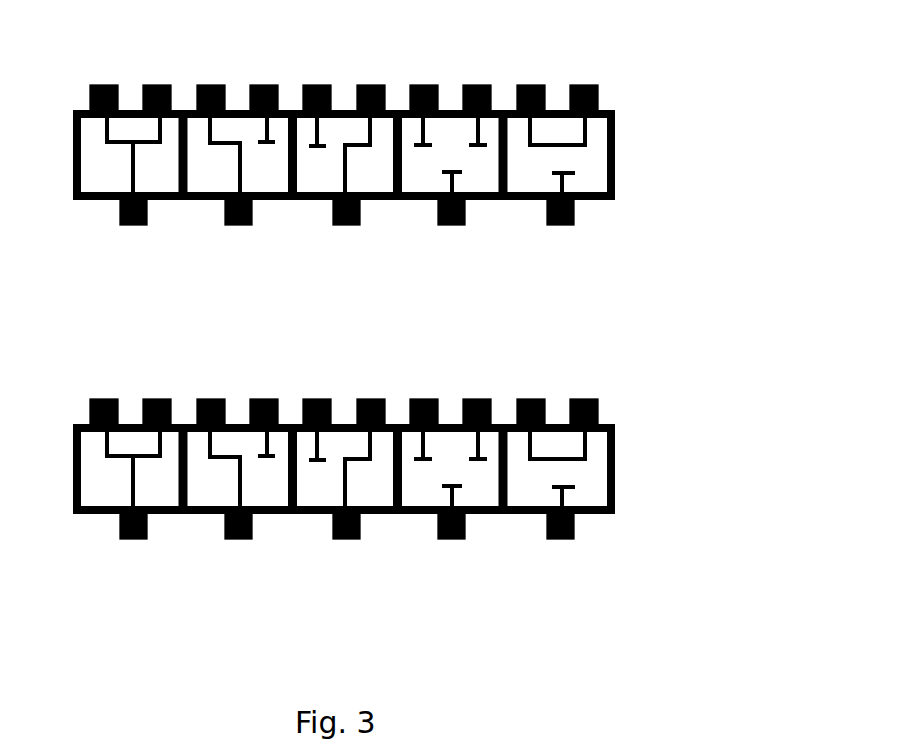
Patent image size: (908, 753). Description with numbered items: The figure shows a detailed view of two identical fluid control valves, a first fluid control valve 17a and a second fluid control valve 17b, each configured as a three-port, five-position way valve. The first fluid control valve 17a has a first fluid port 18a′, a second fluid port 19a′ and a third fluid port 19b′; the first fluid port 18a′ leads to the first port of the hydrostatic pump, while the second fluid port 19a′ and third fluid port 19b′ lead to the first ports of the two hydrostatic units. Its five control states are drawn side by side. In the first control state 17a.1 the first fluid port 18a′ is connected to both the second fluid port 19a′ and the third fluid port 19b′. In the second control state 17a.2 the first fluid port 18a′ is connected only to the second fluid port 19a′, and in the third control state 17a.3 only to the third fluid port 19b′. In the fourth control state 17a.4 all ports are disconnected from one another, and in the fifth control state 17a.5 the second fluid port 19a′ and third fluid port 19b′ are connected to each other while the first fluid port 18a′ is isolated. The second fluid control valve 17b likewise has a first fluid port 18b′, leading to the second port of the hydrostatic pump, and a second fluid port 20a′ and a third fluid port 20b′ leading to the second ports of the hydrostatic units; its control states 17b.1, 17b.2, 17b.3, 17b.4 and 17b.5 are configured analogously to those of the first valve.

The first fluid control valve 17a is at (788, 158).
The second fluid control valve 17b is at (769, 487).
The first control state 17a.1 is at (180, 252).
The second control state 17a.2 is at (187, 252).
The third control state 17a.3 is at (293, 252).
The fourth control state 17a.4 is at (403, 252).
The fifth control state 17a.5 is at (510, 252).
The first control state 17b.1 is at (127, 525).
The second control state 17b.2 is at (236, 525).
The third control state 17b.3 is at (344, 525).
The fourth control state 17b.4 is at (451, 525).
The fifth control state 17b.5 is at (557, 525).
The second fluid port 19a′ is at (531, 84).
The third fluid port 19b′ is at (584, 84).
The first fluid port 18a′ is at (546, 214).
The second fluid port 20a′ is at (318, 380).
The third fluid port 20b′ is at (374, 380).
The first fluid port 18b′ is at (316, 538).